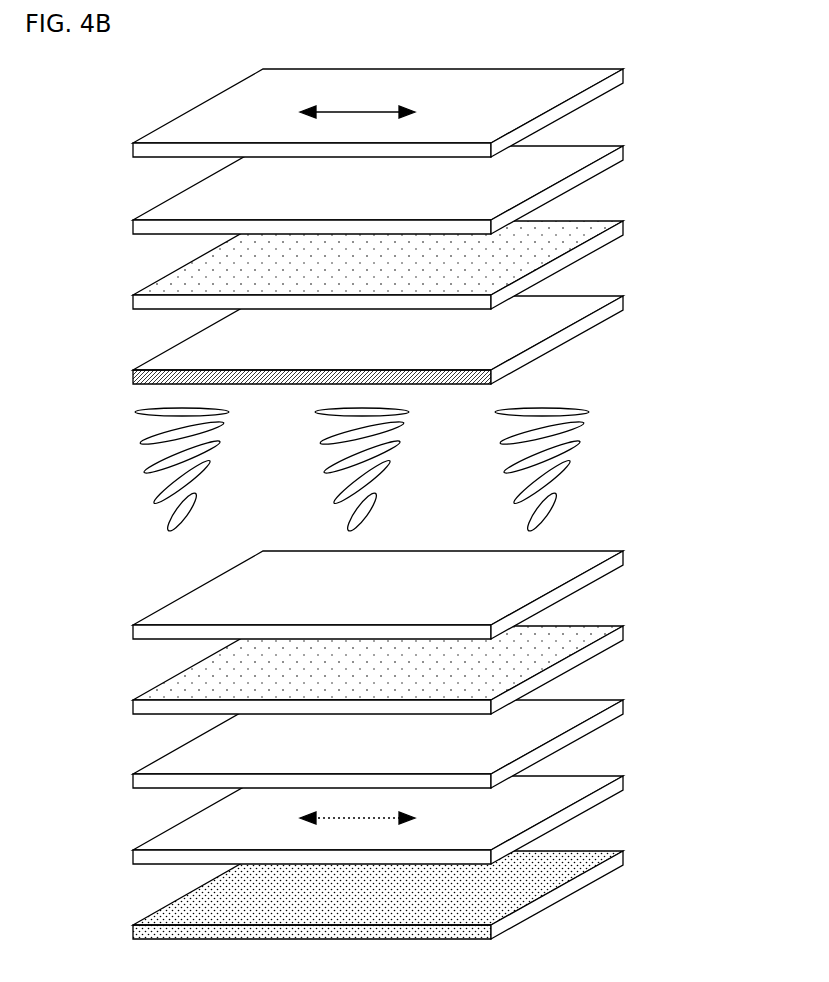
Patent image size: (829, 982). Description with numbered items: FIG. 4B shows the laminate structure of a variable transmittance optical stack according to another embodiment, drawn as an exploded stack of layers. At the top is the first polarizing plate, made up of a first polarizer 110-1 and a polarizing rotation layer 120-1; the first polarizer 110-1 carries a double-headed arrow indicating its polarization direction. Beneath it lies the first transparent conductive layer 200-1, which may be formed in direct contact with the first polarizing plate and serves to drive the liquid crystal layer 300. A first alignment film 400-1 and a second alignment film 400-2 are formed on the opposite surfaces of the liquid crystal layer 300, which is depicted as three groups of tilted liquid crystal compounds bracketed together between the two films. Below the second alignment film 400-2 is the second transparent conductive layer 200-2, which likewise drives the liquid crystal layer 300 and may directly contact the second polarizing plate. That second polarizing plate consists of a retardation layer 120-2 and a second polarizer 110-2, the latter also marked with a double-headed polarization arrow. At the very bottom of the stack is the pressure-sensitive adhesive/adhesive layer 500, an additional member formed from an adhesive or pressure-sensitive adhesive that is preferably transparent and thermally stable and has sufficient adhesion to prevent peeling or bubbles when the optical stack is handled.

The first polarizer 110-1 is at (568, 85).
The polarizing rotation layer 120-1 is at (568, 162).
The first transparent conductive layer 200-1 is at (568, 237).
The first alignment film 400-1 is at (568, 312).
The liquid crystal layer 300 is at (644, 387).
The second alignment film 400-2 is at (568, 567).
The second transparent conductive layer 200-2 is at (568, 642).
The retardation layer 120-2 is at (568, 716).
The second polarizer 110-2 is at (568, 792).
The pressure-sensitive adhesive/adhesive layer 500 is at (568, 867).